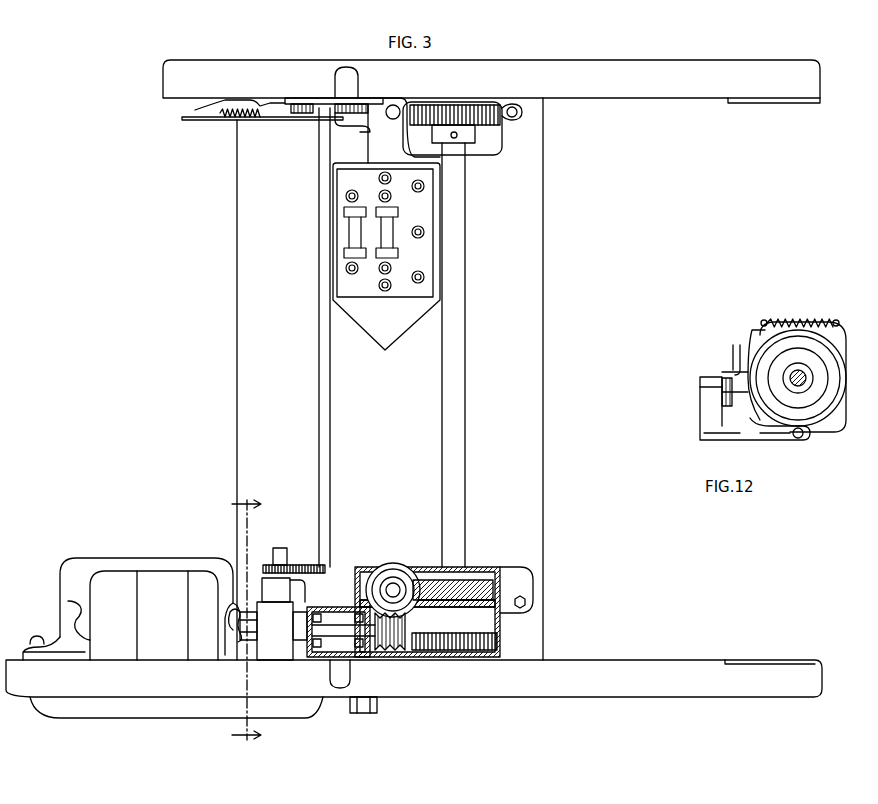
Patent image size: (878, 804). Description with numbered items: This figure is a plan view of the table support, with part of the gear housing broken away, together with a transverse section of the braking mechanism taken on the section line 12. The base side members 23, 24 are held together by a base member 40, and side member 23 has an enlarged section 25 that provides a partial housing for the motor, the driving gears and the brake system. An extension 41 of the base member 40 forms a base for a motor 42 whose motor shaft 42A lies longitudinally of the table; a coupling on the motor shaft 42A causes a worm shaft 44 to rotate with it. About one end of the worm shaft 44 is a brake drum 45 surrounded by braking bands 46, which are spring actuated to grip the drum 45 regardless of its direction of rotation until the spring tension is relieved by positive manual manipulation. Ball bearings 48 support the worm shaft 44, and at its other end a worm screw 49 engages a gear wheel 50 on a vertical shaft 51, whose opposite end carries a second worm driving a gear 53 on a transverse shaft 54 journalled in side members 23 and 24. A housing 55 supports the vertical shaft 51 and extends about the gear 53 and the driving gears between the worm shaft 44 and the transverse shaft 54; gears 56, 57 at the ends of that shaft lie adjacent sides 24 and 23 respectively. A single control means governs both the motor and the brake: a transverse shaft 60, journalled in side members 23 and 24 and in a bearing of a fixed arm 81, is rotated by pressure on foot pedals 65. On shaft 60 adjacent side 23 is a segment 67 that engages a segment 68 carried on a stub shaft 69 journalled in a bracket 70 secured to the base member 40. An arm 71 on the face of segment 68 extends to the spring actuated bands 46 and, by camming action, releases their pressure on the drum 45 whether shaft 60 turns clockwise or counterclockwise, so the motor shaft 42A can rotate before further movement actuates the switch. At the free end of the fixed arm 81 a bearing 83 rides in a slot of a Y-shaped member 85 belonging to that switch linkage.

In FIG. 3, the section line 12 is at (252, 620).
In FIG. 3, the base side member 23 is at (678, 663).
In FIG. 3, the base side member 24 is at (654, 100).
In FIG. 3, the enlarged section 25 is at (92, 718).
In FIG. 3, the base member 40 is at (546, 325).
In FIG. 3, the extension 41 is at (75, 561).
In FIG. 3, the motor 42 is at (144, 569).
In FIG. 3, the motor shaft 42A is at (244, 612).
In FIG. 12, the motor shaft 42A is at (790, 372).
In FIG. 3, the worm shaft 44 is at (340, 633).
In FIG. 3, the brake drum 45 is at (240, 605).
In FIG. 12, the brake drum 45 is at (818, 404).
In FIG. 3, the braking bands 46 is at (275, 650).
In FIG. 12, the braking bands 46 is at (830, 314).
In FIG. 3, the ball bearings 48 is at (318, 646).
In FIG. 3, the worm screw 49 is at (400, 650).
In FIG. 3, the gear wheel 50 is at (414, 545).
In FIG. 3, the vertical shaft 51 is at (393, 583).
In FIG. 3, the gear 53 is at (480, 580).
In FIG. 3, the transverse shaft 54 is at (466, 487).
In FIG. 3, the housing 55 is at (500, 620).
In FIG. 3, the gear 56 is at (486, 123).
In FIG. 3, the gear 57 is at (487, 650).
In FIG. 3, the transverse shaft 60 is at (318, 331).
In FIG. 3, the foot pedals 65 is at (360, 713).
In FIG. 3, the segment 67 is at (270, 578).
In FIG. 3, the segment 68 is at (306, 564).
In FIG. 12, the segment 68 is at (722, 394).
In FIG. 12, the stub shaft 69 is at (708, 376).
In FIG. 12, the bracket 70 is at (708, 404).
In FIG. 3, the arm 71 is at (294, 568).
In FIG. 3, the fixed arm 81 is at (212, 108).
In FIG. 3, the bearing 83 is at (200, 121).
In FIG. 3, the Y-shaped member 85 is at (280, 122).